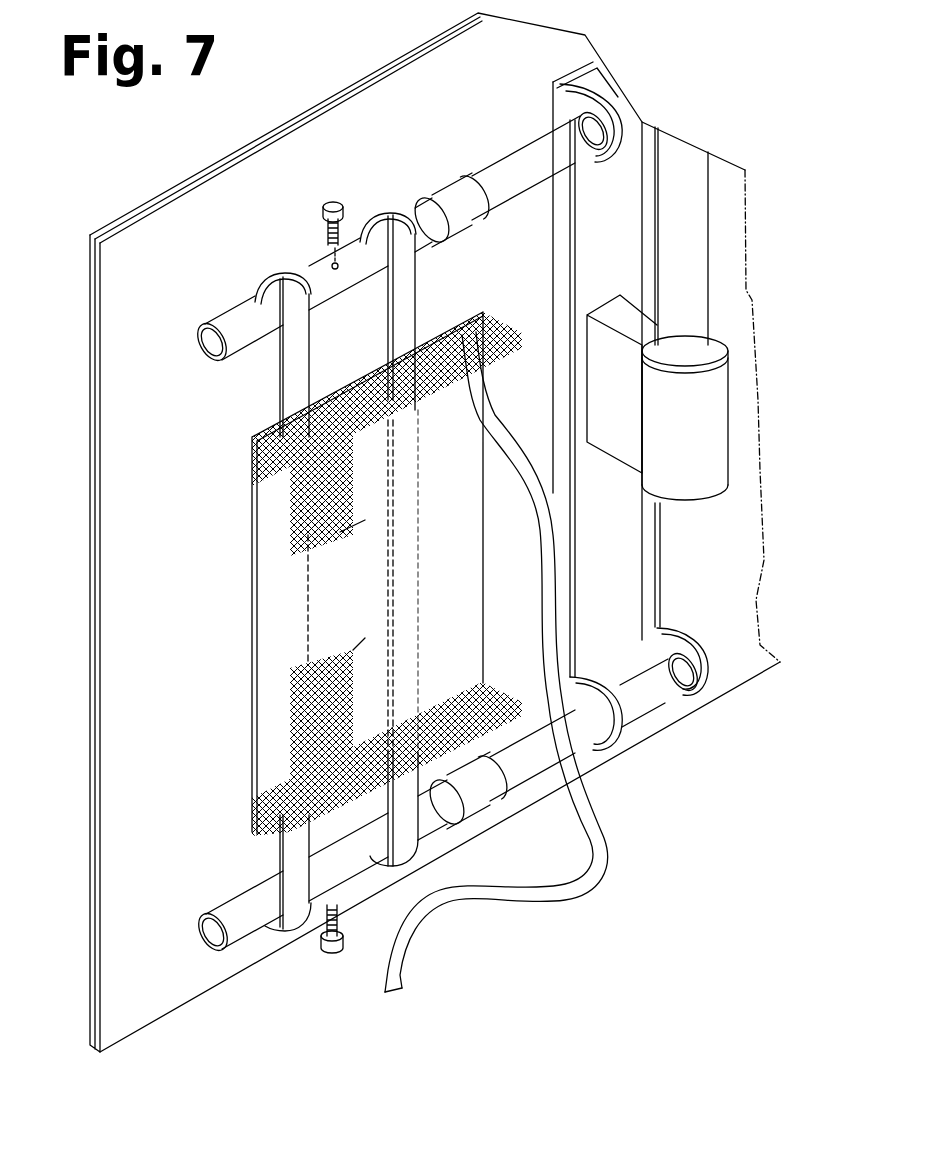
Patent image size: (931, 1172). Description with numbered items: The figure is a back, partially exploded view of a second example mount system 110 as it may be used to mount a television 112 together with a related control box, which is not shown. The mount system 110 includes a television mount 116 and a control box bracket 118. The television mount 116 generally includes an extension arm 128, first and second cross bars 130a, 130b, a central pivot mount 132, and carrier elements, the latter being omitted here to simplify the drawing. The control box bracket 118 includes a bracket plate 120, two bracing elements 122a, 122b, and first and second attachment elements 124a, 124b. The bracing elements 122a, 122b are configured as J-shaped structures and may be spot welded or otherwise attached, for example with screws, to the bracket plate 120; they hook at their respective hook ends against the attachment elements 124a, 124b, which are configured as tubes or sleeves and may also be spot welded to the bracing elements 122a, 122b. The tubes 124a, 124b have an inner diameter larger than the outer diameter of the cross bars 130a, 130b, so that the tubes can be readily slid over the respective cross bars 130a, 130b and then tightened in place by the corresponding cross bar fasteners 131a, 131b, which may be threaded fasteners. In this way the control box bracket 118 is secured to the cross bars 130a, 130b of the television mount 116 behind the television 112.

The mount system 110 is at (115, 160).
The television 112 is at (84, 741).
The television mount 116 is at (683, 512).
The control box bracket 118 is at (250, 657).
The bracket plate 120 is at (249, 535).
The bracing element 122a is at (283, 418).
The bracing element 122b is at (417, 320).
The attachment element 124a is at (228, 312).
The attachment element 124b is at (230, 895).
The extension arm 128 is at (707, 185).
The first cross bar 130a is at (530, 145).
The second cross bar 130b is at (643, 700).
The cross bar fastener 131a is at (320, 212).
The cross bar fastener 131b is at (330, 958).
The central pivot mount 132 is at (735, 378).